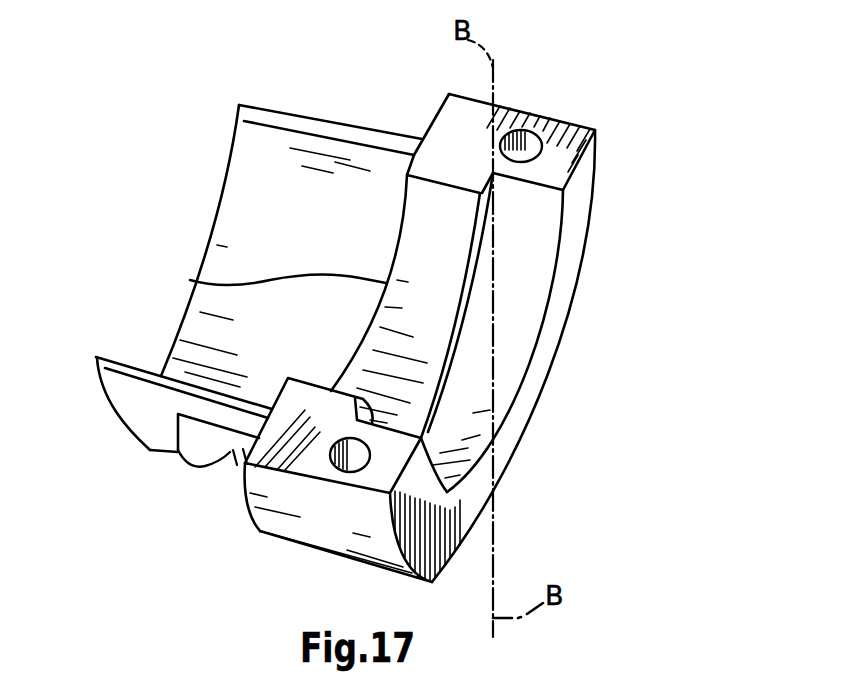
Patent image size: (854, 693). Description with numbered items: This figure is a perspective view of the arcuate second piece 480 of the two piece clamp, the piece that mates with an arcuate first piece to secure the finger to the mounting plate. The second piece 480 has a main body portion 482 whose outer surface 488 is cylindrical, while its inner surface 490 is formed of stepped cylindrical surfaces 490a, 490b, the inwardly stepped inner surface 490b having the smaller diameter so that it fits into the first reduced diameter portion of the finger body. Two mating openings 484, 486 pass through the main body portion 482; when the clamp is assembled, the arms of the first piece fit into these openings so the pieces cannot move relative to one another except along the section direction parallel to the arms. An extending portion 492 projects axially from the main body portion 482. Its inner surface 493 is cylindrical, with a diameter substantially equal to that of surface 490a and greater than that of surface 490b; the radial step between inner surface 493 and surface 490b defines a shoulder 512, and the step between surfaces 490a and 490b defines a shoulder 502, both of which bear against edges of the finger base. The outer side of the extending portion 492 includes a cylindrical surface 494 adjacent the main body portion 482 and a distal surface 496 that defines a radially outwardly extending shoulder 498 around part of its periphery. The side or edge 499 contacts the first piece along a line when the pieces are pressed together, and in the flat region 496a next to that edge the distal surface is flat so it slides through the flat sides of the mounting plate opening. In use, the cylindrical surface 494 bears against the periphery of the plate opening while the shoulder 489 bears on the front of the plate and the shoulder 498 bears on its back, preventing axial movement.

The second piece 480 is at (197, 201).
The main body portion 482 is at (546, 342).
The mating opening 484 is at (527, 143).
The mating opening 486 is at (355, 452).
The outer surface 488 is at (348, 533).
The shoulder 489 is at (250, 500).
The inner surface 490 is at (517, 242).
The stepped cylindrical surface 490a is at (538, 275).
The inwardly stepped inner surface 490b is at (449, 196).
The extending portion 492 is at (343, 193).
The inner surface 493 is at (253, 173).
The cylindrical surface 494 is at (232, 452).
The distal surface 496 is at (151, 452).
The flat region 496a is at (143, 405).
The shoulder 498 is at (193, 460).
The side or edge 499 is at (303, 117).
The shoulder 502 is at (453, 352).
The shoulder 512 is at (197, 280).